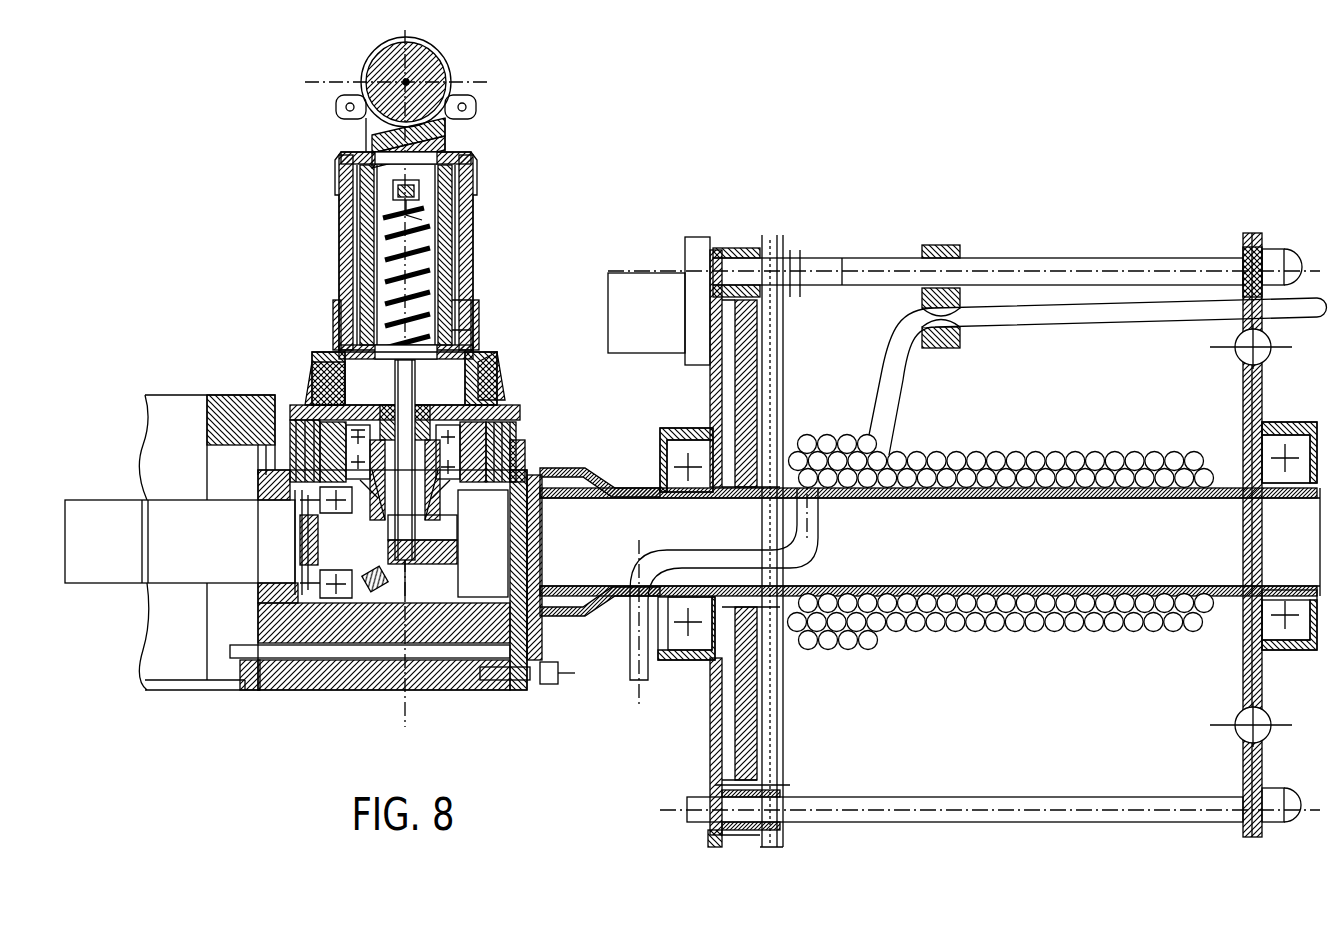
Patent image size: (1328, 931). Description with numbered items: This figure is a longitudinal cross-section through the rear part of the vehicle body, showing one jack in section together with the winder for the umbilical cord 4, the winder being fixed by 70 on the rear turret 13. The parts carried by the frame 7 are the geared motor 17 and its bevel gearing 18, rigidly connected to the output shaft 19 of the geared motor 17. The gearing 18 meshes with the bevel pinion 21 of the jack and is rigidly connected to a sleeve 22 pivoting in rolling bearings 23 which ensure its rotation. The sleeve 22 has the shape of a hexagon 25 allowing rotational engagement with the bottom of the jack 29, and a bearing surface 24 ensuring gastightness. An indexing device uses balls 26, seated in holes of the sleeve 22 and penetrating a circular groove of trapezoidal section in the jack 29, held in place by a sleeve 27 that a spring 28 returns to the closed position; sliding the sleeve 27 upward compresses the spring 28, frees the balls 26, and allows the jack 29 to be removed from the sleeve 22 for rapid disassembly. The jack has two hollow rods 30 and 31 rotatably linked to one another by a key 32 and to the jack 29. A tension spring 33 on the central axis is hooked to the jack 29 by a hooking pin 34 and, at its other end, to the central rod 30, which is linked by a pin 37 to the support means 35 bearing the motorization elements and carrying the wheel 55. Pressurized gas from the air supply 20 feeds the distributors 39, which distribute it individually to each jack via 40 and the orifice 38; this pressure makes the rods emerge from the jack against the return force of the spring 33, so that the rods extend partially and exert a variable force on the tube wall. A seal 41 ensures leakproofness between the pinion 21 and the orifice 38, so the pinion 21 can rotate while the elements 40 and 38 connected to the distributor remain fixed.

The umbilical cord 4 is at (905, 388).
The frame 7 is at (162, 690).
The rear turret 13 is at (330, 680).
The geared motor 17 is at (105, 500).
The bevel gearing 18 is at (390, 600).
The output shaft 19 is at (300, 545).
The air supply 20 is at (245, 660).
The bevel pinion 21 is at (440, 500).
The sleeve 22 is at (336, 306).
The rolling bearings 23 is at (486, 400).
The bearing surface 24 is at (312, 396).
The hexagon 25 is at (300, 420).
The balls 26 is at (320, 360).
The sleeve 27 is at (497, 358).
The spring 28 is at (500, 446).
The jack 29 is at (340, 259).
The hollow rod 30 is at (440, 266).
The hollow rod 31 is at (455, 241).
The key 32 is at (470, 316).
The tension spring 33 is at (458, 211).
The hooking pin 34 is at (500, 425).
The support means 35 is at (377, 129).
The pin 37 is at (432, 146).
The orifice 38 is at (428, 600).
The distributors 39 is at (496, 585).
The gas passage 40 is at (430, 532).
The seal 41 is at (505, 458).
The wheel 55 is at (364, 76).
The fixing 70 is at (560, 690).